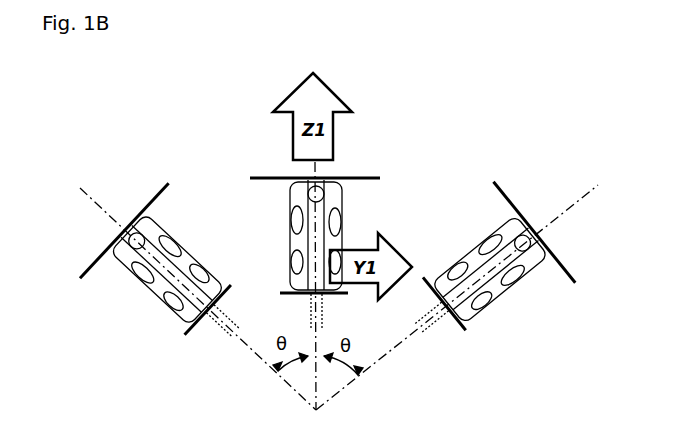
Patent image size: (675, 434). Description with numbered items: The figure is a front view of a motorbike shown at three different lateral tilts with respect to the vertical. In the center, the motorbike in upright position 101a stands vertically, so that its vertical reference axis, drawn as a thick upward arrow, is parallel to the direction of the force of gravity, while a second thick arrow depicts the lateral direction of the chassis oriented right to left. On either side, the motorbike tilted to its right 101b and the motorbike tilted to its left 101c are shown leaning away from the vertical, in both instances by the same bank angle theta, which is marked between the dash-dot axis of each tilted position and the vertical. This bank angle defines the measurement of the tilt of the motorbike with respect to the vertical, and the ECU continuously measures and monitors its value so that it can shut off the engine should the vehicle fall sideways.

The motorbike in upright position 101a is at (300, 213).
The motorbike tilted to its right 101b is at (153, 220).
The motorbike tilted to its left 101c is at (520, 215).